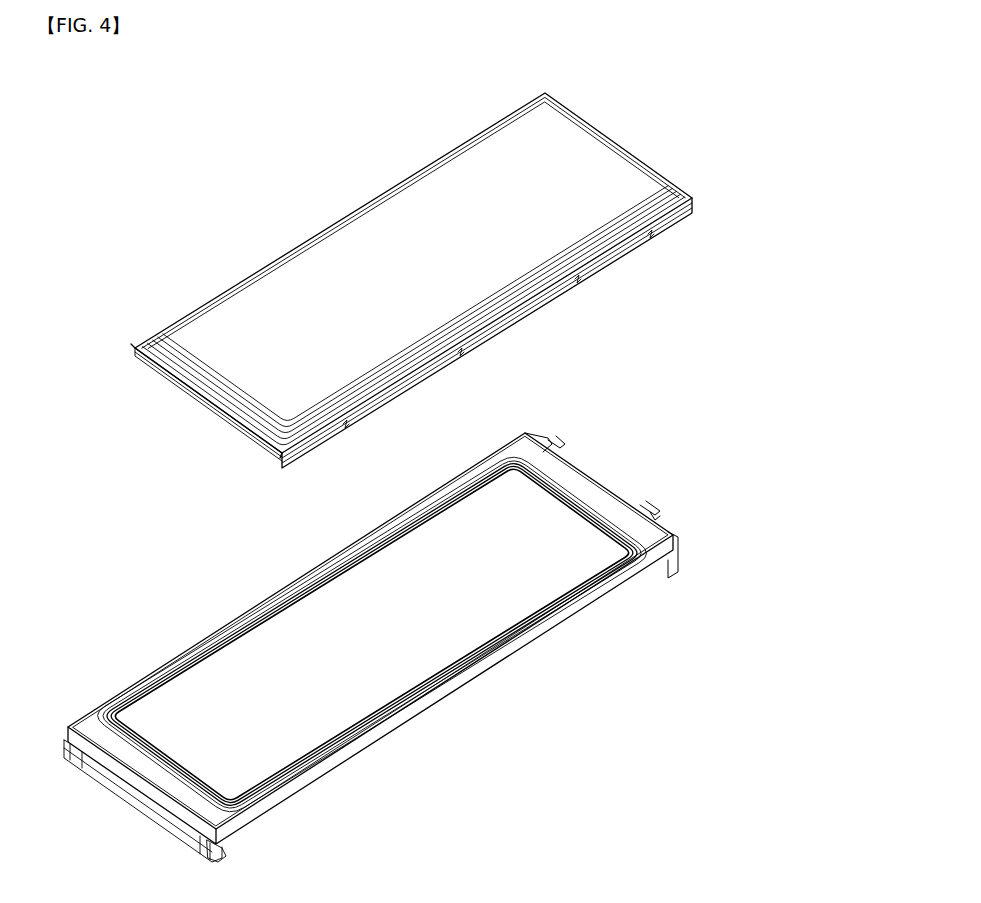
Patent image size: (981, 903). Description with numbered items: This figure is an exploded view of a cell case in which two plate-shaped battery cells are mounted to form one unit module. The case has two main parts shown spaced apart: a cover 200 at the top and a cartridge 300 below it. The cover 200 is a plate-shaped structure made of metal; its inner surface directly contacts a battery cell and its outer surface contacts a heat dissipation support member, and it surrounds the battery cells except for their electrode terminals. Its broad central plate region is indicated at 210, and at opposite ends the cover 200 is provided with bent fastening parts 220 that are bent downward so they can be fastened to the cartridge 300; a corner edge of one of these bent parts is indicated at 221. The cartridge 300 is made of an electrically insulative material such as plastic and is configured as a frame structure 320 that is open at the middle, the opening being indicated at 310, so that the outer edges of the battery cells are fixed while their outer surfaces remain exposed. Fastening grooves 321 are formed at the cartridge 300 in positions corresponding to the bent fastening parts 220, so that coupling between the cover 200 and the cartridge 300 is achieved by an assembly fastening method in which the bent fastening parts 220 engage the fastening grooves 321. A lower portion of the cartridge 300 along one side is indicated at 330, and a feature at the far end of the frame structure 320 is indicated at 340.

The cover 200 is at (477, 284).
The panel top plate 210 is at (393, 243).
The bent fastening parts 220 is at (503, 326).
The rim corner edge 221 is at (140, 357).
The cartridge 300 is at (421, 649).
The frame opening 310 is at (168, 755).
The frame structure 320 is at (298, 566).
The fastening grooves 321 is at (212, 630).
The base plate 330 is at (125, 810).
The latch tab 340 is at (617, 483).